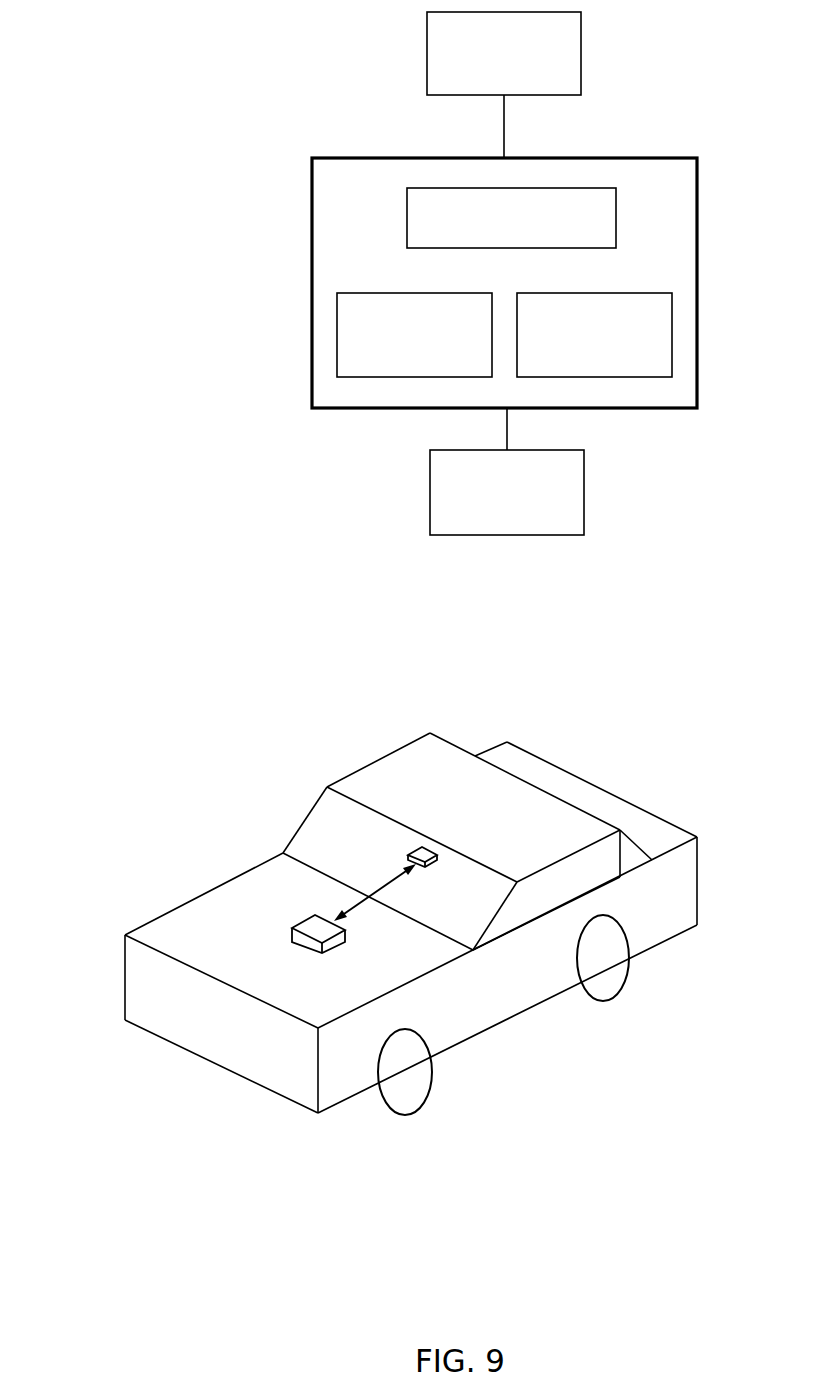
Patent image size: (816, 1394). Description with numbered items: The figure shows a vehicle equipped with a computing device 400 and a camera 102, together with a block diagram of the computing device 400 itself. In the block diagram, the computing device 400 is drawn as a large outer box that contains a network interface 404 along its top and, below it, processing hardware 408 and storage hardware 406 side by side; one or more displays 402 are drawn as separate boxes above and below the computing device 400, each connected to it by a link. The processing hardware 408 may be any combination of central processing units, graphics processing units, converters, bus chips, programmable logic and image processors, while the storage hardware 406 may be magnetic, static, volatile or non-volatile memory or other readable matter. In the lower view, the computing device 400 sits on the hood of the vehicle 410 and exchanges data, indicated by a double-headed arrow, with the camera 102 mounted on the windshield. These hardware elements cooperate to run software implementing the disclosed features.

The computing device 400 is at (279, 278).
The displays 402 is at (529, 67).
The network interface 404 is at (533, 231).
The storage hardware 406 is at (615, 348).
The processing hardware 408 is at (437, 348).
The camera 102 is at (420, 847).
The vehicle 410 is at (147, 923).